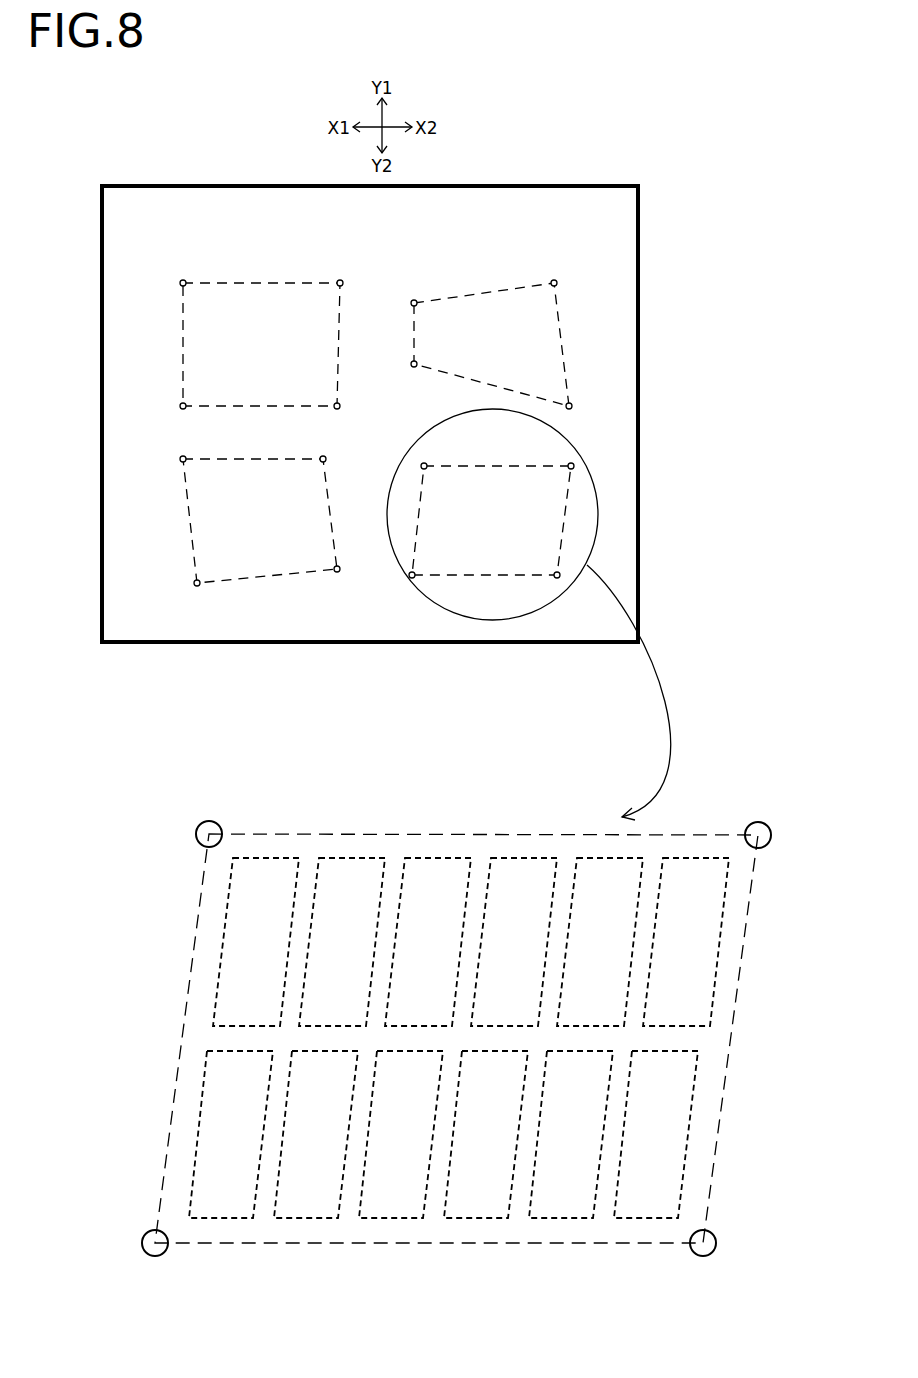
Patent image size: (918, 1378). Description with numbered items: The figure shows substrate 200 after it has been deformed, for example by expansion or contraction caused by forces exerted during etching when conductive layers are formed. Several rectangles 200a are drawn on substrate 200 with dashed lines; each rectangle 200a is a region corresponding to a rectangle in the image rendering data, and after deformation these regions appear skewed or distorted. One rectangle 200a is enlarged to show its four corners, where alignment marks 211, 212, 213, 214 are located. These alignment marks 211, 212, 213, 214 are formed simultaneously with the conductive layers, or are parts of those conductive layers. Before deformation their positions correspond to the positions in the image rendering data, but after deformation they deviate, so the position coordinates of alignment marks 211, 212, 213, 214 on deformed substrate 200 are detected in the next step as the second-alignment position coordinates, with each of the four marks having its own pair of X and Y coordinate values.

The substrate 200 is at (146, 191).
The rectangle 200a is at (216, 282).
The alignment mark 211 is at (146, 1250).
The alignment mark 212 is at (713, 1250).
The alignment mark 213 is at (760, 823).
The alignment mark 214 is at (209, 821).